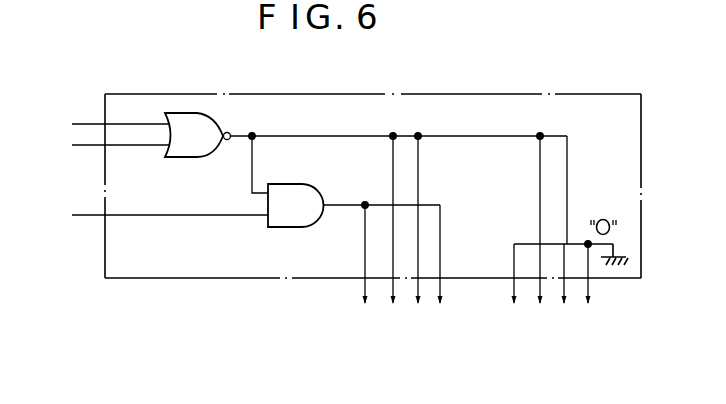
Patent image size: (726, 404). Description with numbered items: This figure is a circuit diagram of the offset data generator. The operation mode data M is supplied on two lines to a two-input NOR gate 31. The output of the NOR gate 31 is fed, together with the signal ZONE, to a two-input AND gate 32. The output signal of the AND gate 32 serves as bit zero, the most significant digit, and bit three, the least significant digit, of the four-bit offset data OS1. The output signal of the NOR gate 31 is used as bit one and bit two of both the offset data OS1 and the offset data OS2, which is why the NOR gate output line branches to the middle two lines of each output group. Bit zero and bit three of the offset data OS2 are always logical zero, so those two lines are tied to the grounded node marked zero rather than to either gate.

The two-input NOR gate 31 is at (185, 159).
The two-input AND gate 32 is at (294, 229).
The operation mode data M is at (64, 121).
The signal ZONE is at (138, 215).
The offset data OS1 is at (444, 307).
The offset data OS2 is at (593, 307).